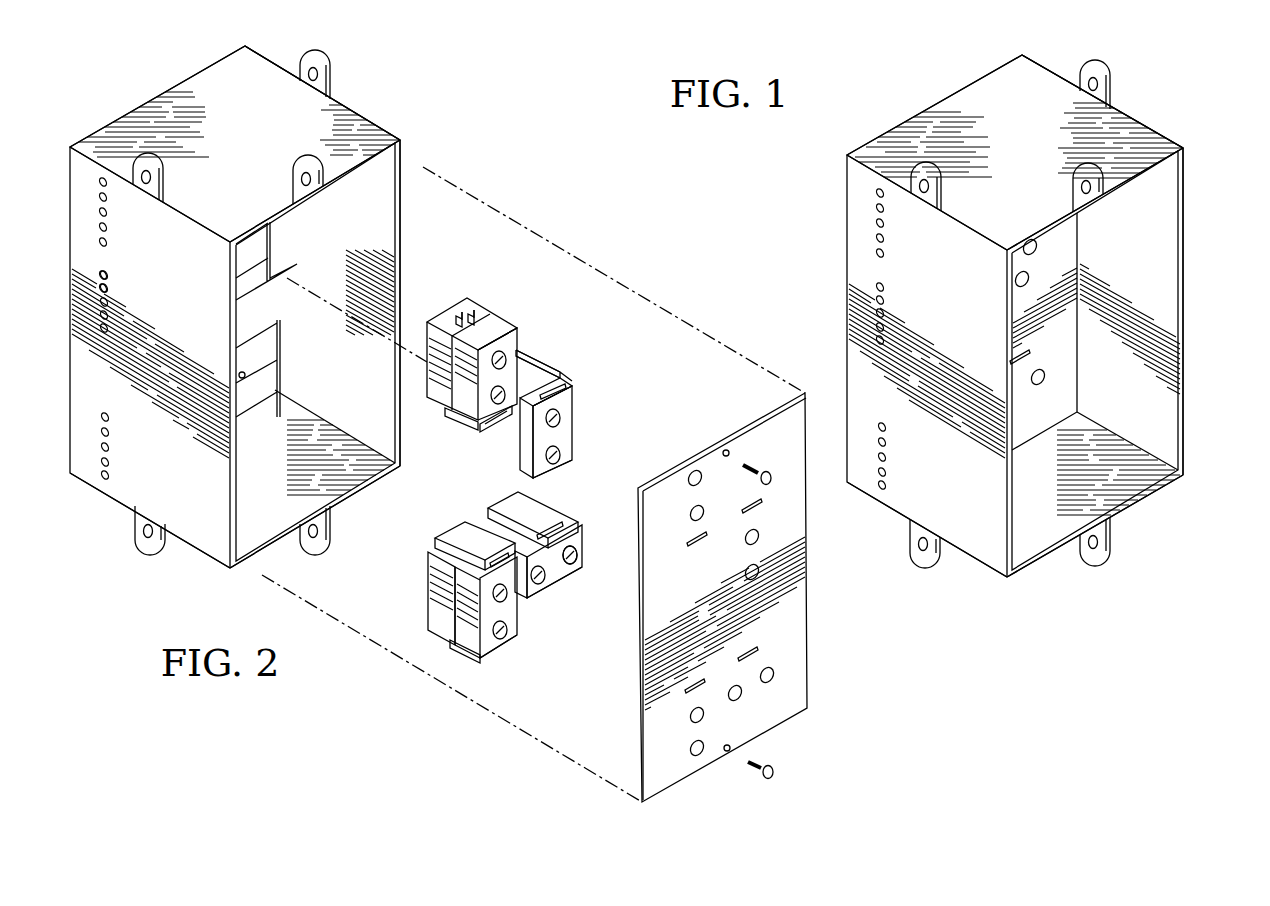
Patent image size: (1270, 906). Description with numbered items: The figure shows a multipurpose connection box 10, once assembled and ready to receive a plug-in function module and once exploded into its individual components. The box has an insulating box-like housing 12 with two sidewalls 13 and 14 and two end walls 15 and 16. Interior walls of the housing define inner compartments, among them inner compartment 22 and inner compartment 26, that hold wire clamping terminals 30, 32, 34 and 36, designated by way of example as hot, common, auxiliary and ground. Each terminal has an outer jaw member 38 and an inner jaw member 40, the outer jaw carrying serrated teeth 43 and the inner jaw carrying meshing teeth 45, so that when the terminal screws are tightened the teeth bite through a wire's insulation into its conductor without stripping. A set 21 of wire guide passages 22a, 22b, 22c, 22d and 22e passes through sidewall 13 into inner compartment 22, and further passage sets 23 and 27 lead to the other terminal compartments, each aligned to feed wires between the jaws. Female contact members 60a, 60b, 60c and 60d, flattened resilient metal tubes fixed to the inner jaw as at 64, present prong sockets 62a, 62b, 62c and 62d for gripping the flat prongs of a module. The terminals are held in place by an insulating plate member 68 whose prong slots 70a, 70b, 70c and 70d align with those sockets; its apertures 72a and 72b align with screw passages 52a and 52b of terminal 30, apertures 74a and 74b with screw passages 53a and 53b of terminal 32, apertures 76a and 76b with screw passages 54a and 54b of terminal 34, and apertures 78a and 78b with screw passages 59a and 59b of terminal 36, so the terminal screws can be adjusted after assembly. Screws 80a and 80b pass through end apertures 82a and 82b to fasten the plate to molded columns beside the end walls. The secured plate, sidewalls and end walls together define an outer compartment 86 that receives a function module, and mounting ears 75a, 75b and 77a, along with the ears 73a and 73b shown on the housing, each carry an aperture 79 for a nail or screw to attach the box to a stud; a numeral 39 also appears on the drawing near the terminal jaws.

In FIG. 2, the multipurpose connection box 10 is at (135, 88).
In FIG. 1, the multipurpose connection box 10 is at (868, 108).
In FIG. 2, the box-like housing 12 is at (368, 112).
In FIG. 1, the box-like housing 12 is at (942, 95).
In FIG. 2, the sidewall 13 is at (225, 565).
In FIG. 1, the sidewall 13 is at (1005, 570).
In FIG. 2, the sidewall 14 is at (408, 150).
In FIG. 1, the sidewall 14 is at (1188, 450).
In FIG. 2, the end wall 15 is at (205, 88).
In FIG. 1, the end wall 15 is at (1040, 80).
In FIG. 2, the end wall 16 is at (282, 565).
In FIG. 1, the end wall 16 is at (1040, 572).
In FIG. 2, the set of multiple passages 21 is at (95, 282).
In FIG. 1, the set of multiple passages 21 is at (865, 285).
In FIG. 2, the inner compartment 22 is at (278, 240).
In FIG. 2, the wire guide passage 22a is at (107, 274).
In FIG. 2, the wire guide passage 22b is at (107, 287).
In FIG. 2, the wire guide passage 22c is at (107, 300).
In FIG. 2, the wire guide passage 22d is at (107, 314).
In FIG. 2, the wire guide passage 22e is at (107, 328).
In FIG. 2, the set of multiple passages 23 is at (90, 205).
In FIG. 1, the set of multiple passages 23 is at (865, 210).
In FIG. 2, the inner compartment 26 is at (284, 345).
In FIG. 2, the set of multiple passages 27 is at (92, 438).
In FIG. 1, the set of multiple passages 27 is at (865, 430).
In FIG. 2, the clamping terminal 30 is at (588, 380).
In FIG. 2, the clamping terminal 32 is at (437, 292).
In FIG. 2, the clamping terminal 34 is at (578, 585).
In FIG. 2, the clamping terminal 36 is at (520, 655).
In FIG. 2, the outer jaw member 38 is at (515, 330).
In FIG. 2, the terminal 39 is at (486, 312).
In FIG. 2, the inner jaw member 40 is at (455, 300).
In FIG. 2, the teeth 43 is at (500, 320).
In FIG. 2, the teeth 45 is at (468, 305).
In FIG. 2, the screw passage 52a is at (572, 400).
In FIG. 2, the screw passage 52b is at (570, 455).
In FIG. 2, the screw passage 53a is at (520, 350).
In FIG. 2, the screw passage 53b is at (560, 372).
In FIG. 2, the screw passage 54a is at (578, 556).
In FIG. 2, the screw passage 54b is at (560, 575).
In FIG. 2, the screw passage 59a is at (445, 640).
In FIG. 2, the screw passage 59b is at (520, 630).
In FIG. 2, the female contact member 60a is at (550, 355).
In FIG. 2, the female contact member 60b is at (478, 412).
In FIG. 2, the female contact member 60c is at (440, 548).
In FIG. 2, the female contact member 60d is at (508, 500).
In FIG. 2, the prong socket 62a is at (566, 385).
In FIG. 2, the prong socket 62b is at (490, 420).
In FIG. 2, the prong socket 62c is at (530, 598).
In FIG. 2, the prong socket 62d is at (560, 532).
In FIG. 2, the fixing location 64 is at (470, 525).
In FIG. 2, the plate member 68 is at (810, 627).
In FIG. 1, the plate member 68 is at (1082, 242).
In FIG. 2, the prong slot 70a is at (762, 506).
In FIG. 2, the prong slot 70b is at (697, 548).
In FIG. 2, the prong slot 70c is at (688, 687).
In FIG. 2, the prong slot 70d is at (758, 655).
In FIG. 1, the prong slot 70d is at (1012, 355).
In FIG. 2, the aperture 72a is at (760, 538).
In FIG. 1, the aperture 72a is at (1028, 240).
In FIG. 2, the aperture 72b is at (760, 572).
In FIG. 1, the aperture 72b is at (1016, 277).
In FIG. 2, the mounting ear 73a is at (292, 168).
In FIG. 1, the mounting ear 73a is at (1075, 168).
In FIG. 2, the mounting ear 73b is at (334, 535).
In FIG. 1, the mounting ear 73b is at (1115, 540).
In FIG. 2, the aperture 74a is at (694, 468).
In FIG. 2, the aperture 74b is at (690, 516).
In FIG. 2, the mounting ear 75a is at (168, 172).
In FIG. 1, the mounting ear 75a is at (943, 178).
In FIG. 2, the mounting ear 75b is at (335, 68).
In FIG. 1, the mounting ear 75b is at (1115, 90).
In FIG. 2, the aperture 76a is at (743, 695).
In FIG. 2, the aperture 76b is at (775, 676).
In FIG. 1, the aperture 76b is at (1046, 380).
In FIG. 2, the mounting ear 77a is at (145, 552).
In FIG. 1, the mounting ear 77a is at (935, 568).
In FIG. 2, the aperture 78a is at (690, 717).
In FIG. 2, the aperture 78b is at (690, 752).
In FIG. 2, the aperture 79 is at (132, 160).
In FIG. 1, the aperture 79 is at (1090, 96).
In FIG. 2, the screw 80a is at (748, 462).
In FIG. 2, the screw 80b is at (775, 774).
In FIG. 2, the end aperture 82a is at (724, 447).
In FIG. 2, the end aperture 82b is at (726, 754).
In FIG. 2, the outer compartment 86 is at (366, 186).
In FIG. 1, the outer compartment 86 is at (1140, 272).